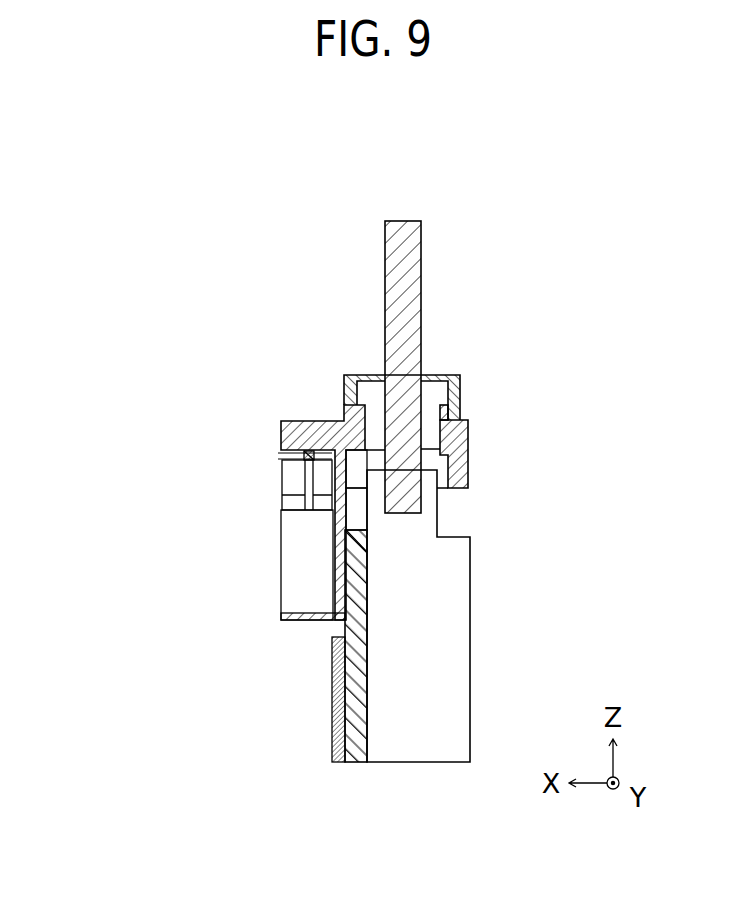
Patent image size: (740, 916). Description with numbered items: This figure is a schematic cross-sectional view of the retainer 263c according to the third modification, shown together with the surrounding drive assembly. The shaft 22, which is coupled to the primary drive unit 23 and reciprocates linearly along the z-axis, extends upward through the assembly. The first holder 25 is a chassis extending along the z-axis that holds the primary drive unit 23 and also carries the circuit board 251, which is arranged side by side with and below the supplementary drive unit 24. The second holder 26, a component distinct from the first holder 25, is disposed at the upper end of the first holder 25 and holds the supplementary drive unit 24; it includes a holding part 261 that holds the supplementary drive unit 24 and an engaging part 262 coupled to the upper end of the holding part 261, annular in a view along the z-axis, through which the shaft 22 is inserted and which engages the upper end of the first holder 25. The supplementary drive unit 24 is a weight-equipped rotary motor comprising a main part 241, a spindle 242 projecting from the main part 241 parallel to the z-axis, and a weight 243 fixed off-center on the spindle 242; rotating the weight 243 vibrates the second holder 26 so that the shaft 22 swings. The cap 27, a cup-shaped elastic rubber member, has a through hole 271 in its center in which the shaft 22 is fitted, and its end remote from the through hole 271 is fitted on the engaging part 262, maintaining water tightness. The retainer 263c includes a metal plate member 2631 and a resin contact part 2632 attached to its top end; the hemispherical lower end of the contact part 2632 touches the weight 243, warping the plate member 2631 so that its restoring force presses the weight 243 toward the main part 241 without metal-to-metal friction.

The shaft 22 is at (410, 272).
The primary drive unit 23 is at (460, 678).
The supplementary drive unit 24 is at (227, 540).
The main part 241 is at (293, 524).
The spindle 242 is at (305, 502).
The weight 243 is at (290, 477).
The first holder 25 is at (348, 695).
The circuit board 251 is at (333, 737).
The second holder 26 is at (327, 480).
The holding part 261 is at (304, 420).
The engaging part 262 is at (466, 446).
The retainer 263c is at (190, 432).
The plate member 2631 is at (302, 452).
The contact part 2632 is at (296, 458).
The cap 27 is at (448, 373).
The through hole 271 is at (407, 373).